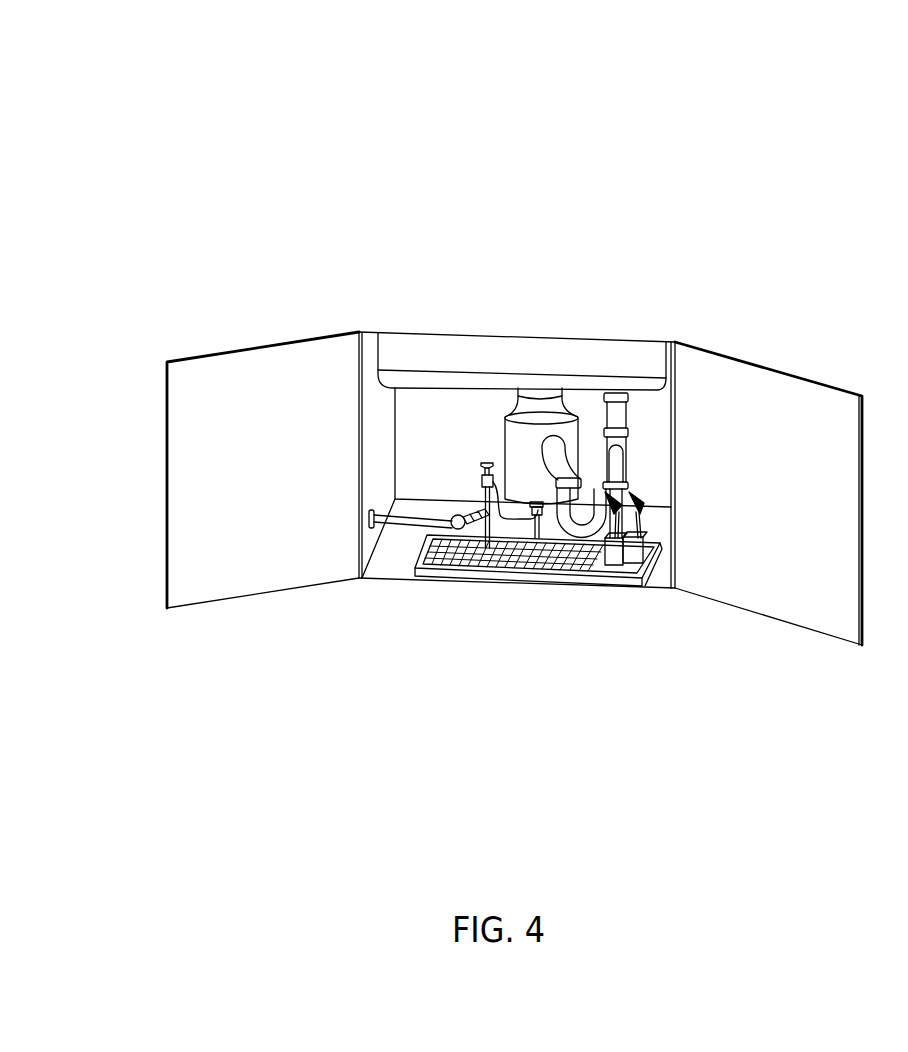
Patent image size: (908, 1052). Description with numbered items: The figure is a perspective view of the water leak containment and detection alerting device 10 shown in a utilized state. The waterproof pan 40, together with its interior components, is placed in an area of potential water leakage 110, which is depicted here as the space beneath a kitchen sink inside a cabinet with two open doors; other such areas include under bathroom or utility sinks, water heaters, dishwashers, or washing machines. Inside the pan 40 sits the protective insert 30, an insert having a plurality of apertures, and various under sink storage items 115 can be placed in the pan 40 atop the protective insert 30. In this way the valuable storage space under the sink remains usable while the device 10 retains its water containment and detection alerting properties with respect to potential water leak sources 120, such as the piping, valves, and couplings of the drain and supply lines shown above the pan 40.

The water leak containment and detection alerting device 10 is at (121, 769).
The protective insert 30 is at (498, 570).
The waterproof pan 40 is at (460, 570).
The area of potential water leakage 110 is at (650, 416).
The under sink storage items 115 is at (642, 500).
The potential water leak sources 120 is at (490, 463).